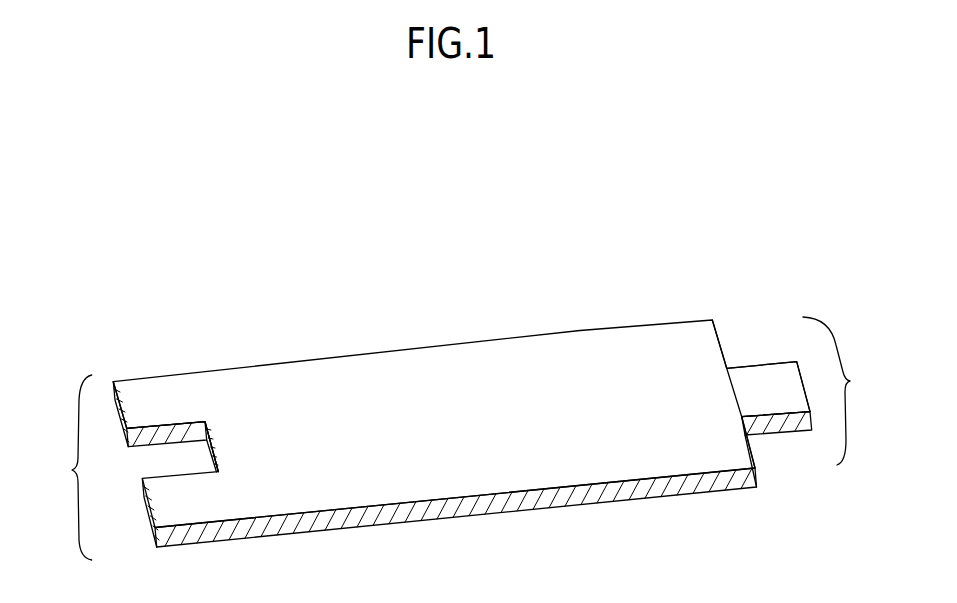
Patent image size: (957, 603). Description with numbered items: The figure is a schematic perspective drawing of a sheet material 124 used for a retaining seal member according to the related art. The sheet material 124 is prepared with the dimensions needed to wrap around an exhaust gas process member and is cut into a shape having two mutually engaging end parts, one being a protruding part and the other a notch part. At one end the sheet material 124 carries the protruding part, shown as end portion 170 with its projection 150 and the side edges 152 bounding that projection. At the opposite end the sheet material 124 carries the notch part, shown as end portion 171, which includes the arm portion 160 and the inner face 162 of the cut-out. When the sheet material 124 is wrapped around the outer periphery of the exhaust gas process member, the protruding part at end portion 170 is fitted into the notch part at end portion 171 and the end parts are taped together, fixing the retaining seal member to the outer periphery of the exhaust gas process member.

The sheet material 124 is at (539, 320).
The protrusion 150 is at (768, 377).
The side edges of protrusion 152 is at (739, 420).
The arm portion 160 is at (166, 458).
The notch side face 162 is at (213, 443).
The protruding end portion 170 is at (848, 391).
The notched end portion 171 is at (58, 467).